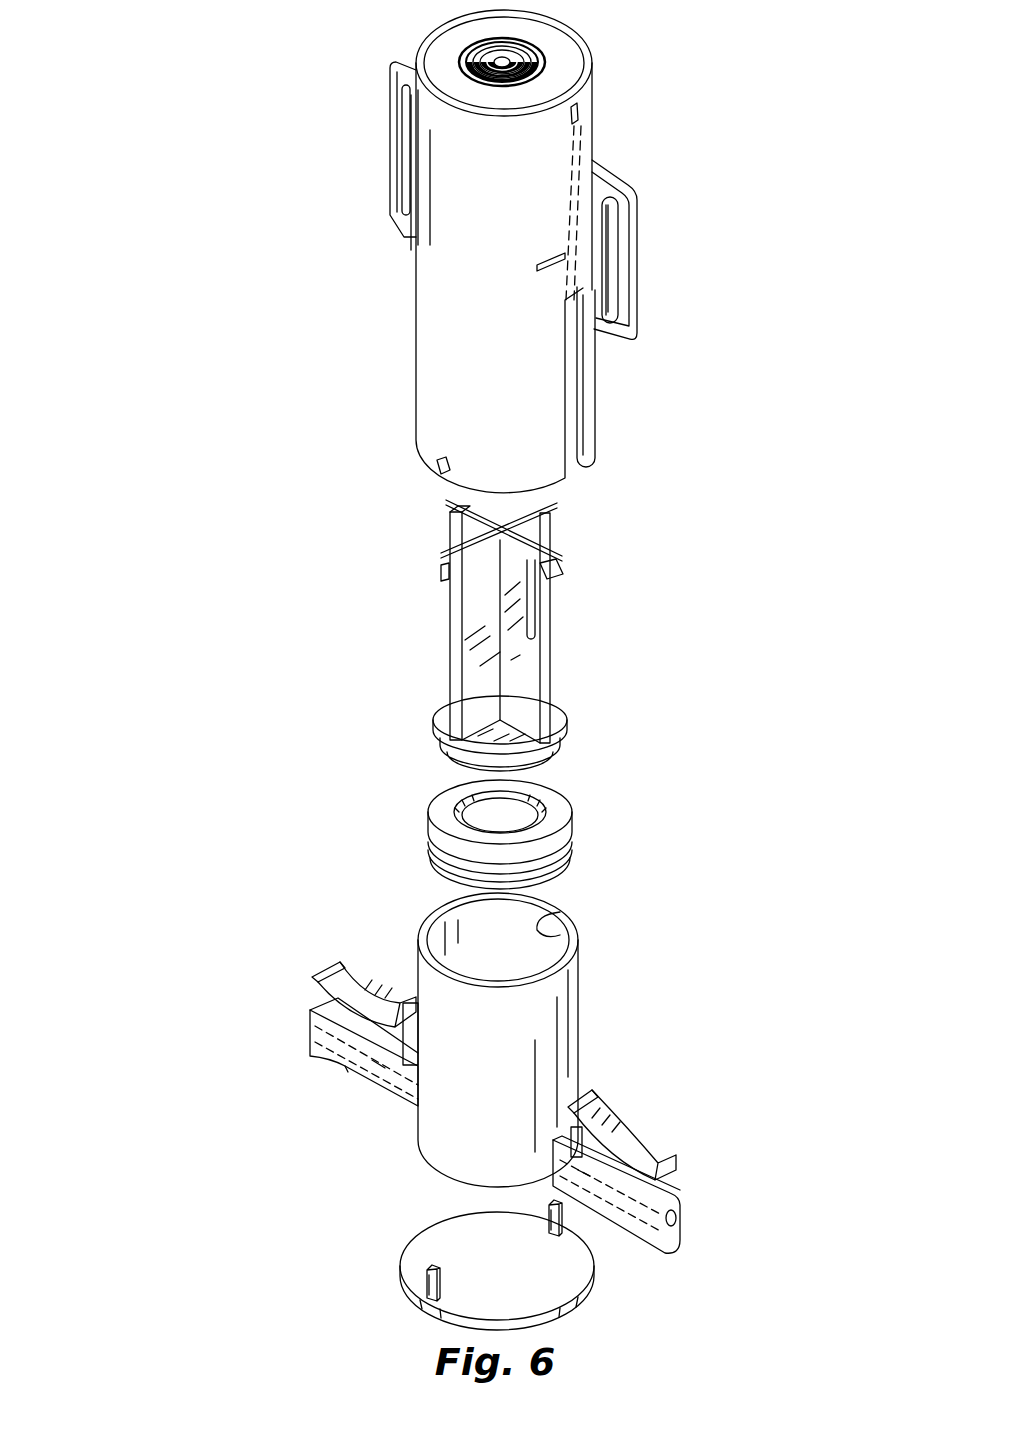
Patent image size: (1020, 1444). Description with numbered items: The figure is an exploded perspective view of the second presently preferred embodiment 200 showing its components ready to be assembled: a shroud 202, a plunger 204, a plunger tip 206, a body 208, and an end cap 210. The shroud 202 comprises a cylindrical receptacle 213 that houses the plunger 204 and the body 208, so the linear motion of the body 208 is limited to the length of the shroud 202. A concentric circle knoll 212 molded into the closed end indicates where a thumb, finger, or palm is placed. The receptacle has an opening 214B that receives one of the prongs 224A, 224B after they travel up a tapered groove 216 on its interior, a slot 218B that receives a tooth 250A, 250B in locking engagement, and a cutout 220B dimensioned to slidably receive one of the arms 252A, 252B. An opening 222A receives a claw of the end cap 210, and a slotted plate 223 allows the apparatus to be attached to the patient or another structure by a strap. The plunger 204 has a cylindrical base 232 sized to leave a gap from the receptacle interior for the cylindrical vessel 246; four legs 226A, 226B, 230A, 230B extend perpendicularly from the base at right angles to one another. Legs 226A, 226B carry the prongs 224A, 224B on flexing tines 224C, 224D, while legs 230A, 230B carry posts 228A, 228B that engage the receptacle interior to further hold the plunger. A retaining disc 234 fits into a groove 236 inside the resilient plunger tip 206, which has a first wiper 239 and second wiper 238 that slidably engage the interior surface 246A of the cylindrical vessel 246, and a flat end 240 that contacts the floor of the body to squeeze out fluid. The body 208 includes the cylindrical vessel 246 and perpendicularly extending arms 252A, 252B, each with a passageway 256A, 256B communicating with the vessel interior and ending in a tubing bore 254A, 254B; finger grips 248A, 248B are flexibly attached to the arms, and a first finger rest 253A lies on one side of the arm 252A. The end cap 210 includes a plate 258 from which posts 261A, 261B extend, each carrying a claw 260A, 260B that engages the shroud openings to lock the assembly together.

The second presently preferred embodiment 200 is at (195, 330).
The shroud 202 is at (628, 165).
The plunger 204 is at (610, 567).
The plunger tip 206 is at (600, 808).
The body 208 is at (606, 1012).
The end cap 210 is at (588, 1316).
The concentric circle knoll 212 is at (528, 40).
The cylindrical receptacle 213 is at (470, 205).
The opening 214B is at (580, 112).
The tapered groove 216 is at (572, 162).
The slot 218B is at (606, 257).
The cutout 220B is at (592, 385).
The opening 222A is at (437, 466).
The slotted plate 223 is at (395, 118).
The prong 224A is at (448, 534).
The prong 224B is at (562, 575).
The tine 224C is at (444, 568).
The tine 224D is at (550, 612).
The leg 226A is at (448, 520).
The leg 226B is at (528, 662).
The post 228A is at (447, 582).
The post 228B is at (556, 505).
The leg 230A is at (470, 640).
The leg 230B is at (551, 527).
The cylindrical base 232 is at (562, 718).
The retaining disc 234 is at (560, 745).
The groove 236 is at (537, 791).
The second wiper 238 is at (431, 812).
The first wiper 239 is at (433, 846).
The flat end 240 is at (579, 875).
The cylindrical vessel 246 is at (579, 975).
The interior surface 246A is at (551, 925).
The finger grip 248A is at (343, 985).
The finger grip 248B is at (622, 1135).
The tooth 250A is at (412, 995).
The tooth 250B is at (582, 1128).
The arm 252A is at (311, 1010).
The arm 252B is at (682, 1192).
The first finger rest 253A is at (355, 1067).
The tubing bore 254A is at (312, 1030).
The tubing bore 254B is at (683, 1218).
The passageway 256A is at (388, 1070).
The passageway 256B is at (583, 1180).
The plate 258 is at (596, 1285).
The claw 260A is at (425, 1278).
The claw 260B is at (549, 1208).
The post 261A is at (441, 1290).
The post 261B is at (548, 1222).